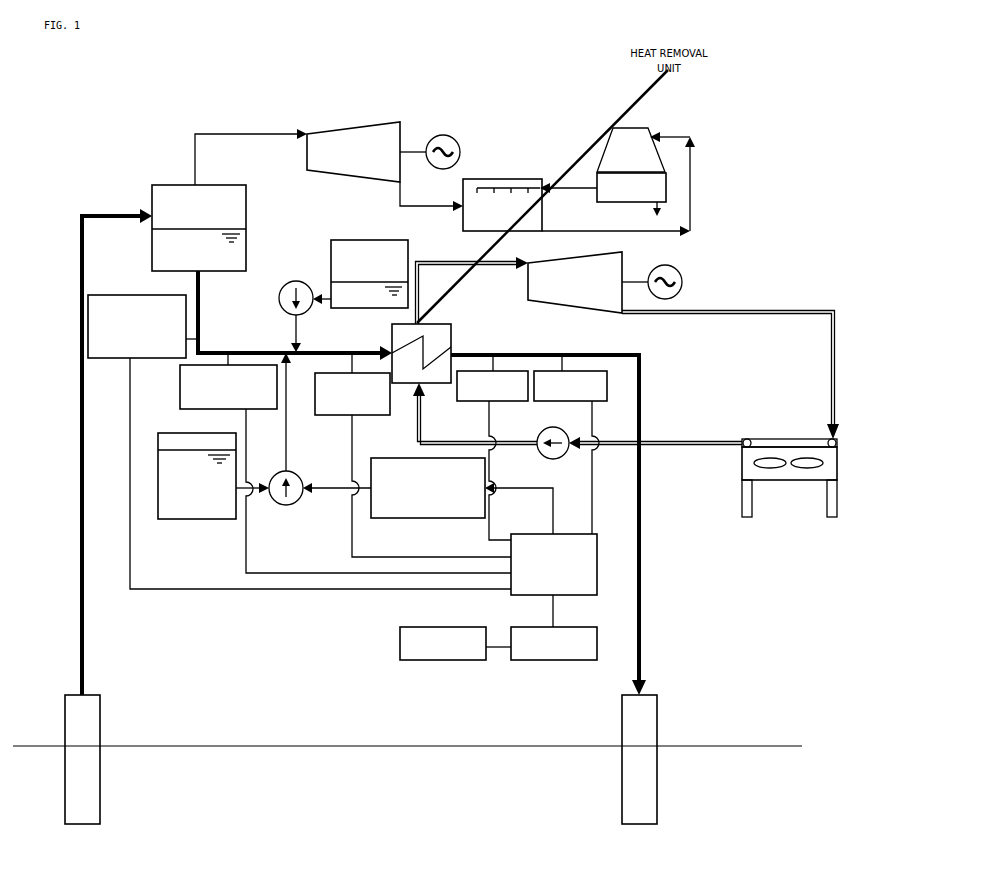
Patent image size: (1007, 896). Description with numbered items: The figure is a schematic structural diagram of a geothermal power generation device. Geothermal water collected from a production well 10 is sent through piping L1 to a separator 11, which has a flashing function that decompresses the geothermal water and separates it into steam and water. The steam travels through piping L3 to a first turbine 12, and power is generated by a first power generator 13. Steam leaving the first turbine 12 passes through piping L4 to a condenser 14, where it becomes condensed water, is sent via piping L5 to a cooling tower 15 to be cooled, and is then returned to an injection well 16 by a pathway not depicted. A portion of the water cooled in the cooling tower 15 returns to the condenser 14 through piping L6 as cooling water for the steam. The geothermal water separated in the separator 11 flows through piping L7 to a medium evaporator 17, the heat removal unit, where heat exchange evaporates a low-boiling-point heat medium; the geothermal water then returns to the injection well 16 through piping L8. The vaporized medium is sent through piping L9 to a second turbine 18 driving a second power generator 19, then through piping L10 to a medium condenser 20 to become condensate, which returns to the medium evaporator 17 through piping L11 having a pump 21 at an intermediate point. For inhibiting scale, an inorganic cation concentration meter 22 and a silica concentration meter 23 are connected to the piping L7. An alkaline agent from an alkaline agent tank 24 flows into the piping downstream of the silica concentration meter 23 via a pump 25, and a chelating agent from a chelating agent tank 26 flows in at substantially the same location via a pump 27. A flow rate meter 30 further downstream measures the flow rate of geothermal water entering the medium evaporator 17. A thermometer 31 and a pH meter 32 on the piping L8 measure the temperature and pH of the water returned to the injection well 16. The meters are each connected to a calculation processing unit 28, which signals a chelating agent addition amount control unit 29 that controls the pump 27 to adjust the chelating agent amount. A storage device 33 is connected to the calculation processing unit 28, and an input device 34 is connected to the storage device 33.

The production well 10 is at (100, 790).
The separator 11 is at (150, 197).
The first turbine 12 is at (336, 128).
The first power generator 13 is at (457, 139).
The condenser 14 is at (544, 214).
The cooling tower 15 is at (612, 140).
The injection well 16 is at (620, 778).
The medium evaporator 17 is at (428, 323).
The second turbine 18 is at (566, 302).
The second power generator 19 is at (684, 278).
The medium condenser 20 is at (840, 461).
The pump 21 is at (540, 430).
The inorganic cation concentration meter 22 is at (113, 362).
The silica concentration meter 23 is at (208, 410).
The alkaline agent tank 24 is at (356, 240).
The pump 25 is at (284, 281).
The chelating agent tank 26 is at (192, 520).
The pump 27 is at (300, 473).
The calculation processing unit 28 is at (600, 576).
The chelating agent addition amount control unit 29 is at (408, 519).
The flow rate meter 30 is at (376, 416).
The thermometer 31 is at (468, 402).
The pH meter 32 is at (603, 382).
The storage device 33 is at (558, 662).
The input device 34 is at (445, 662).
The piping L1 is at (78, 387).
The piping L3 is at (199, 148).
The piping L4 is at (420, 207).
The piping L5 is at (650, 236).
The piping L6 is at (562, 186).
The piping L7 is at (205, 326).
The piping L8 is at (645, 526).
The piping L9 is at (497, 268).
The piping L10 is at (770, 310).
The piping L11 is at (668, 441).